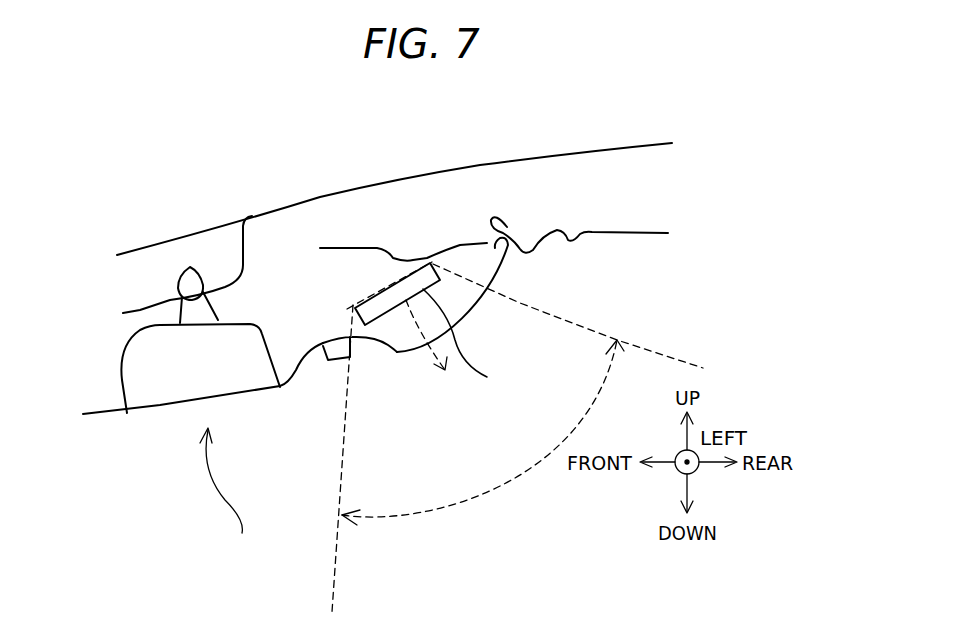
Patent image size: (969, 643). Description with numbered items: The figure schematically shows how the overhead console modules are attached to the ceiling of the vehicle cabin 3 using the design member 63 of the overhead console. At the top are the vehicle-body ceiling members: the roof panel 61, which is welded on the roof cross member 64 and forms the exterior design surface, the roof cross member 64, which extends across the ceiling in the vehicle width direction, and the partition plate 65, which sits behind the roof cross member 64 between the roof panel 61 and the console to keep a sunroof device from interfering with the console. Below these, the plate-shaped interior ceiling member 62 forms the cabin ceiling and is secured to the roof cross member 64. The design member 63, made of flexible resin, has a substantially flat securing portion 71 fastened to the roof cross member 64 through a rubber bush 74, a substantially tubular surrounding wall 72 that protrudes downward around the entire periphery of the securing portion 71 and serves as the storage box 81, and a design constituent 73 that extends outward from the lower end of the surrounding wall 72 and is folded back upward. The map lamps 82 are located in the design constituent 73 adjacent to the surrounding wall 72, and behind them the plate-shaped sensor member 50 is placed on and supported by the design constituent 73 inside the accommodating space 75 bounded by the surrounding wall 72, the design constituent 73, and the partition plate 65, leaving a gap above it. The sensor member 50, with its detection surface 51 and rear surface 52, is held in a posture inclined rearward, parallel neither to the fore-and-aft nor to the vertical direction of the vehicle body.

The roof panel 61 is at (402, 180).
The interior ceiling member 62 is at (650, 233).
The design member 63 is at (181, 479).
The roof cross member 64 is at (246, 247).
The partition plate 65 is at (393, 253).
The plate-shaped sensor member 50 is at (398, 352).
The detection surface 51 is at (466, 338).
The rear surface 52 is at (355, 308).
The securing portion 71 is at (165, 322).
The surrounding wall 72 is at (121, 381).
The design constituent 73 is at (290, 383).
The rubber bush 74 is at (195, 268).
The accommodating space 75 is at (384, 328).
The storage box 81 is at (180, 375).
The map lamps 82 is at (340, 363).
The vehicle cabin 3 is at (557, 495).